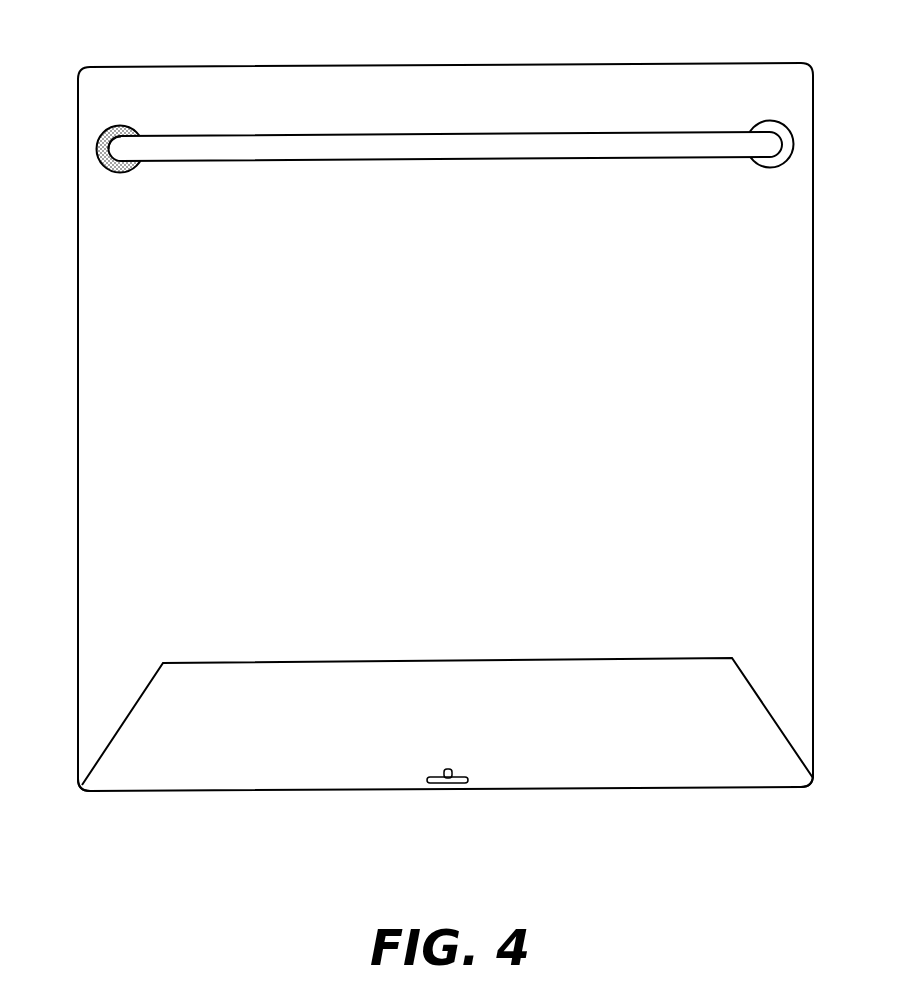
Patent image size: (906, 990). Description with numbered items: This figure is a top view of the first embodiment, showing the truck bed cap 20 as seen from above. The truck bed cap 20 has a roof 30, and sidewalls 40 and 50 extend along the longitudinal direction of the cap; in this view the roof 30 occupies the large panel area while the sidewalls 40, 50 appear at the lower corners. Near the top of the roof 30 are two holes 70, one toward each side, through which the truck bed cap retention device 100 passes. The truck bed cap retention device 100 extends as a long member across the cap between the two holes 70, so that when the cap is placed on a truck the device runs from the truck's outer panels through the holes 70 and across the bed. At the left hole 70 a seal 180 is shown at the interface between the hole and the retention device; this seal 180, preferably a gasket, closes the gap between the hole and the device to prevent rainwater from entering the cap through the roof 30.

The truck bed cap 20 is at (387, 790).
The roof 30 is at (135, 284).
The sidewall 40 is at (80, 737).
The sidewall 50 is at (815, 727).
The holes 70 is at (124, 127).
The truck bed cap retention device 100 is at (280, 135).
The seal 180 is at (130, 134).